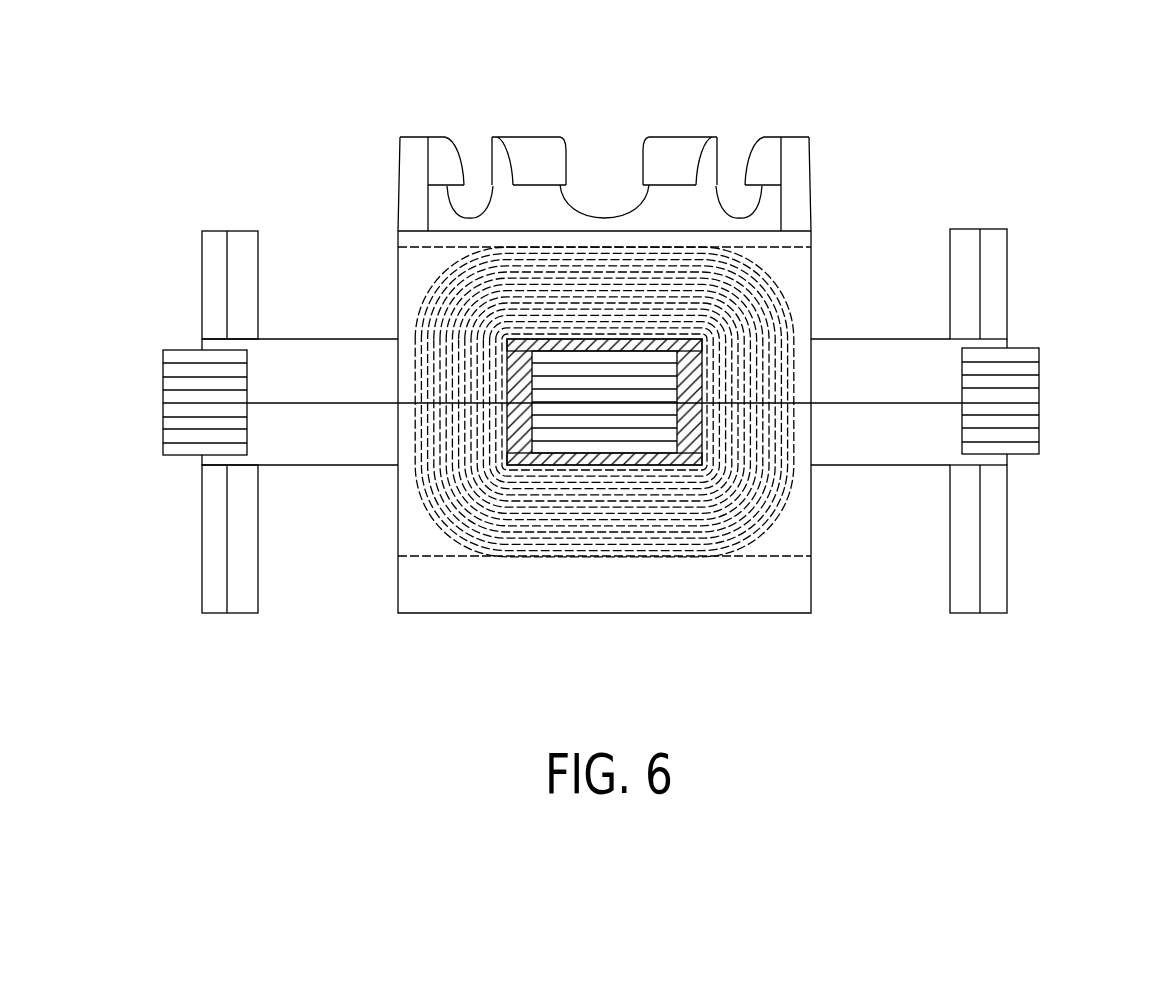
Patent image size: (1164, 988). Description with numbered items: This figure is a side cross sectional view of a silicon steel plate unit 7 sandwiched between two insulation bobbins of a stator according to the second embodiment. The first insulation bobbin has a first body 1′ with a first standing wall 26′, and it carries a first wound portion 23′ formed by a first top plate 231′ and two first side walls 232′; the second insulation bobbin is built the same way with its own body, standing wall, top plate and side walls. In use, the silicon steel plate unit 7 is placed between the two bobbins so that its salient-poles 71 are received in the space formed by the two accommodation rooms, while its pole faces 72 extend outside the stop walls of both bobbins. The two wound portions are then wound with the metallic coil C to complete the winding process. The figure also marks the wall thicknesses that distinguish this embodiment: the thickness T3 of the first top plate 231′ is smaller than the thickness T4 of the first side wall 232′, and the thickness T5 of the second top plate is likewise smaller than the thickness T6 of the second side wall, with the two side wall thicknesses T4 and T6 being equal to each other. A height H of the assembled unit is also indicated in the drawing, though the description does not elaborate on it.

The first body 1′ is at (800, 248).
The silicon steel plate unit 7 is at (1047, 348).
The salient-poles 71 is at (572, 357).
The pole faces 72 is at (1031, 333).
The first wound portion 23′ is at (622, 238).
The first top plate 231′ is at (610, 347).
The first side walls 232′ is at (695, 353).
The first standing wall 26′ is at (208, 262).
The metallic coil C is at (440, 288).
The height dimension H is at (398, 555).
The thickness of the first top plate T3 is at (811, 351).
The thickness of the first side wall T4 is at (531, 662).
The thickness of the second top plate T5 is at (811, 453).
The thickness of the second side wall T6 is at (575, 654).